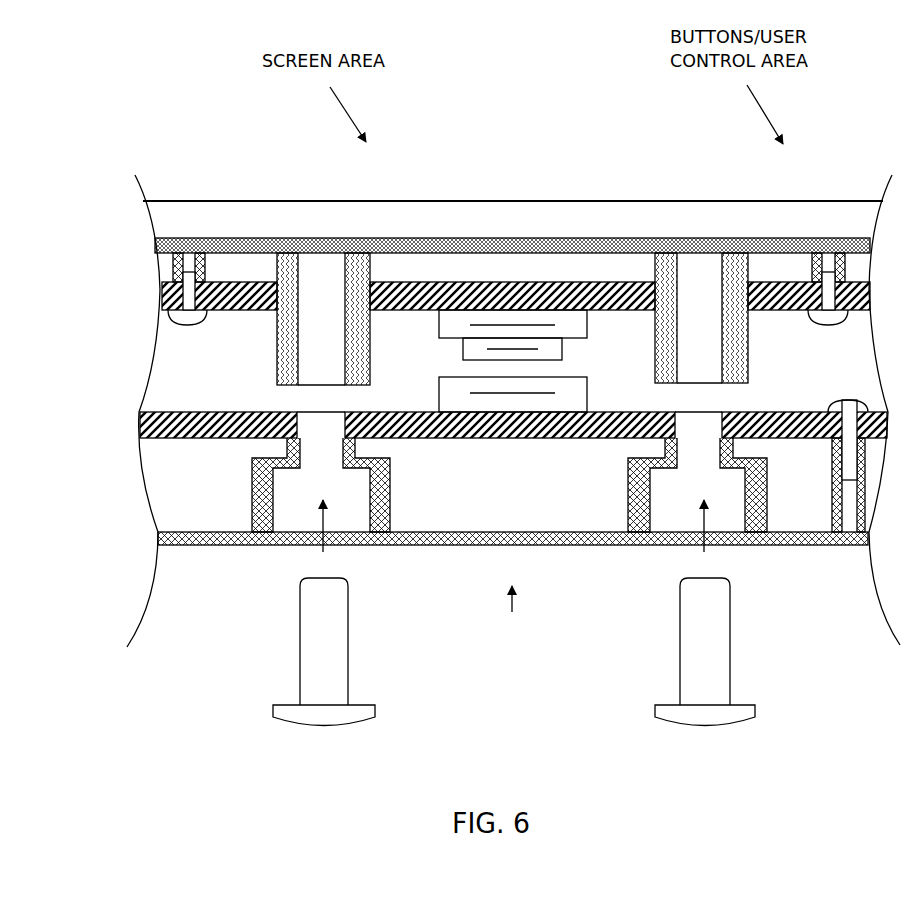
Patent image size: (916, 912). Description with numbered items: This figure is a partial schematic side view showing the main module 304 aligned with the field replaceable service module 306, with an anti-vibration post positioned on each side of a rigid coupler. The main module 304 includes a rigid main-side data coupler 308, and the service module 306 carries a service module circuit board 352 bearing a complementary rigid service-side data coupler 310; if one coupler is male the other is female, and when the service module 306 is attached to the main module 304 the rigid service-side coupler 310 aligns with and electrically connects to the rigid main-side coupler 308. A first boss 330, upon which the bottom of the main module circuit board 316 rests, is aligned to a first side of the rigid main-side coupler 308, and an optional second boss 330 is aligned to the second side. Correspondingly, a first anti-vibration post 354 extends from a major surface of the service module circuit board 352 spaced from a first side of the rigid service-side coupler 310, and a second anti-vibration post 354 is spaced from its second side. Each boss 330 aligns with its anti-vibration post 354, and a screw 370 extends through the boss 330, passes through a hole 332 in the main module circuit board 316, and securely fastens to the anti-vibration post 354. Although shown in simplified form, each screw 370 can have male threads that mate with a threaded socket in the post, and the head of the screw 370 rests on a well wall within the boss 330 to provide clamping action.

The main module 304 is at (512, 615).
The service module 306 is at (578, 176).
The rigid main-side data coupler 308 is at (456, 392).
The rigid service-side data coupler 310 is at (458, 318).
The main module circuit board 316 is at (138, 420).
The boss 330 is at (252, 508).
The hole 332 is at (316, 424).
The service module circuit board 352 is at (162, 296).
The anti-vibration post 354 is at (372, 340).
The screw 370 is at (298, 668).